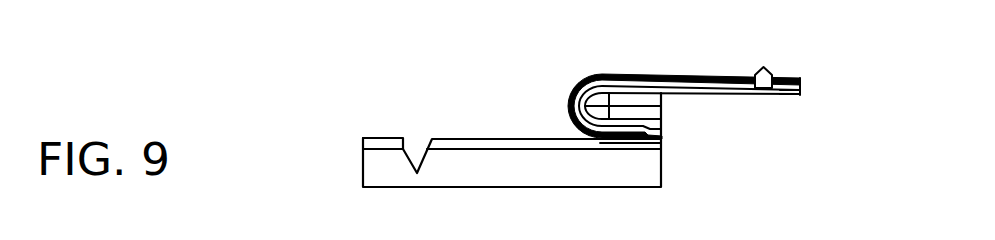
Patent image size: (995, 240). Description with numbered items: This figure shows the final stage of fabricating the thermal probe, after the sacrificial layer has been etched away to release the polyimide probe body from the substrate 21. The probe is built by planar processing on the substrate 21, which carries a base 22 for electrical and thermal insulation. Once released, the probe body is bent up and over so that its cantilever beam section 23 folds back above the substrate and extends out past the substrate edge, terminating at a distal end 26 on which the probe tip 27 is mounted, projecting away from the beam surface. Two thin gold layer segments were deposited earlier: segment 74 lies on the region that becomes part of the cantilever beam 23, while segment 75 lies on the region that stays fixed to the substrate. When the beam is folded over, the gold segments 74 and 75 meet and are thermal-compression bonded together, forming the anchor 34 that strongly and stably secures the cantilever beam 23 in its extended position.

The substrate 21 is at (363, 173).
The base 22 is at (466, 138).
The cantilever beam section 23 is at (692, 75).
The anchor 34 is at (624, 102).
The probe tip 27 is at (767, 70).
The distal end 26 is at (793, 97).
The gold layer segment 74 is at (650, 99).
The gold layer segment 75 is at (655, 118).